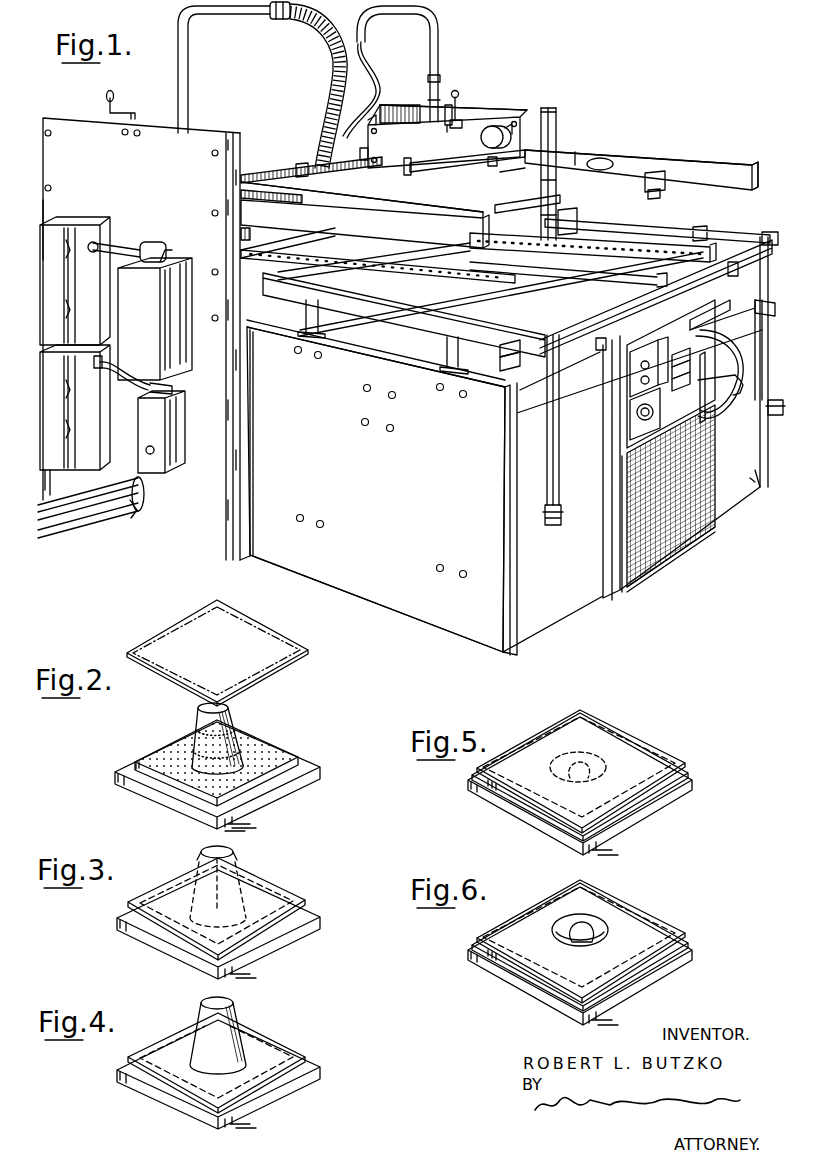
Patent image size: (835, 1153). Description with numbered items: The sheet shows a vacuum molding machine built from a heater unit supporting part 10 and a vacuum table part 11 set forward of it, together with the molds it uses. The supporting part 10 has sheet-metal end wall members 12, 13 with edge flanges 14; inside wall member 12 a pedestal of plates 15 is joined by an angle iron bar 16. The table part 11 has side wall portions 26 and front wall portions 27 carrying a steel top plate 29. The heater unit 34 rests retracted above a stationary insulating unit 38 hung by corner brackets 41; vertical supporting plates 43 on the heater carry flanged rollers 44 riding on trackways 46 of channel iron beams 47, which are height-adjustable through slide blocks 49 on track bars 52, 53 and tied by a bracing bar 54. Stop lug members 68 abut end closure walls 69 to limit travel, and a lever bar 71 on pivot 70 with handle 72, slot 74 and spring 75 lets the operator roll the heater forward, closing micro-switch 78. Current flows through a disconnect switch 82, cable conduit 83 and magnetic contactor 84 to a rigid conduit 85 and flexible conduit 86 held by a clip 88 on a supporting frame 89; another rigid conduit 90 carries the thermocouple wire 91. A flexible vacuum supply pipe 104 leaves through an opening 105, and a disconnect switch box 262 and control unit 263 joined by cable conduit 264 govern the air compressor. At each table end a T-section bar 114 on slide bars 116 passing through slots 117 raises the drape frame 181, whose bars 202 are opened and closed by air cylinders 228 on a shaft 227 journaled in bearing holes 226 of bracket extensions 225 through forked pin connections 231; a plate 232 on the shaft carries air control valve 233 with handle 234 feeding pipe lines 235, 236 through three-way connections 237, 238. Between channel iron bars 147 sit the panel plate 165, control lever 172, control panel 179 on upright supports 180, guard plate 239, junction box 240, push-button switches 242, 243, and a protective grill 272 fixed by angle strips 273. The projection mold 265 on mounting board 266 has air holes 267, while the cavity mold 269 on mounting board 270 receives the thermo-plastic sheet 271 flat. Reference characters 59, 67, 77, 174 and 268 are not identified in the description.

In FIG. 1, the heater unit supporting part 10 is at (37, 200).
In FIG. 1, the vacuum table part 11 is at (353, 611).
In FIG. 1, the end wall member 12 is at (62, 132).
In FIG. 1, the end wall member 13 is at (505, 110).
In FIG. 1, the flanges 14 is at (233, 133).
In FIG. 1, the vertically disposed plates 15 is at (252, 556).
In FIG. 1, the angle iron bar 16 is at (251, 320).
In FIG. 1, the side wall portions 26 is at (405, 607).
In FIG. 1, the front wall portions 27 is at (738, 495).
In FIG. 1, the top plate 29 is at (362, 352).
In FIG. 1, the heater unit 34 is at (518, 164).
In FIG. 1, the stationary heat insulating unit 38 is at (324, 246).
In FIG. 1, the angle corner brackets 41 is at (508, 207).
In FIG. 1, the vertical supporting plate 43 is at (472, 122).
In FIG. 1, the flanged rollers 44 is at (372, 122).
In FIG. 1, the horizontal trackways 46 is at (438, 216).
In FIG. 1, the horizontal channel iron beams 47 is at (400, 230).
In FIG. 1, the slide block 49 is at (556, 195).
In FIG. 1, the vertical track bar 52 is at (389, 106).
In FIG. 1, the vertical track bar 53 is at (555, 110).
In FIG. 1, the horizontal bracing bar 54 is at (577, 205).
In FIG. 1, the bracket 59 is at (470, 116).
In FIG. 1, the crank handle 67 is at (108, 102).
In FIG. 1, the stop lug member 68 is at (362, 151).
In FIG. 1, the end closure walls 69 is at (756, 183).
In FIG. 1, the pivot point 70 is at (481, 140).
In FIG. 1, the elongated lever bar 71 is at (574, 160).
In FIG. 1, the handle 72 is at (604, 158).
In FIG. 1, the slot 74 is at (430, 152).
In FIG. 1, the spring 75 is at (413, 163).
In FIG. 1, the clamp 77 is at (660, 172).
In FIG. 1, the micro-switch 78 is at (654, 192).
In FIG. 1, the disconnect switch 82 is at (42, 273).
In FIG. 1, the cable conduit 83 is at (130, 243).
In FIG. 1, the automatic magnetic contactor 84 is at (180, 266).
In FIG. 1, the rigid conduit 85 is at (188, 78).
In FIG. 1, the flexible conduit 86 is at (332, 84).
In FIG. 1, the clip 88 is at (270, 172).
In FIG. 1, the supporting frame 89 is at (300, 165).
In FIG. 1, the rigid conduit 90 is at (437, 45).
In FIG. 1, the conductor wire 91 is at (366, 60).
In FIG. 1, the flexible vacuum supply pipe 104 is at (86, 527).
In FIG. 1, the opening 105 is at (133, 512).
In FIG. 1, the transversely extending bar 114 is at (397, 317).
In FIG. 1, the vertical slide bars 116 is at (319, 322).
In FIG. 1, the slots 117 is at (326, 335).
In FIG. 1, the channel iron bars 147 is at (613, 590).
In FIG. 1, the panel plate 165 is at (730, 418).
In FIG. 1, the control lever 172 is at (704, 385).
In FIG. 1, the connector 174 is at (740, 390).
In FIG. 1, the control panel 179 is at (662, 340).
In FIG. 1, the upright supports 180 is at (622, 352).
In FIG. 1, the drape frame 181 is at (598, 238).
In FIG. 1, the bars 202 is at (727, 232).
In FIG. 1, the bracket extensions 225 is at (512, 346).
In FIG. 1, the bearing holes 226 is at (515, 360).
In FIG. 1, the shaft 227 is at (748, 250).
In FIG. 1, the air cylinders 228 is at (555, 522).
In FIG. 1, the forked pin connections 231 is at (773, 230).
In FIG. 1, the downwardly extending plate 232 is at (678, 355).
In FIG. 1, the air control valve 233 is at (697, 340).
In FIG. 1, the control handle 234 is at (695, 358).
In FIG. 1, the pipe lines 235 is at (568, 440).
In FIG. 1, the pipe lines 236 is at (735, 274).
In FIG. 1, the three-way pipe connection 237 is at (757, 307).
In FIG. 1, the three-way pipe connection 238 is at (705, 318).
In FIG. 1, the guard plate 239 is at (600, 400).
In FIG. 1, the junction box 240 is at (654, 405).
In FIG. 1, the push-button switch 242 is at (636, 352).
In FIG. 1, the push-button switch 243 is at (658, 340).
In FIG. 1, the disconnect switch box 262 is at (45, 395).
In FIG. 1, the control unit 263 is at (138, 437).
In FIG. 1, the cable conduit 264 is at (125, 382).
In FIG. 2, the projection mold 265 is at (196, 727).
In FIG. 3, the projection mold 265 is at (262, 866).
In FIG. 4, the projection mold 265 is at (280, 1038).
In FIG. 2, the mounting board 266 is at (130, 760).
In FIG. 3, the mounting board 266 is at (292, 928).
In FIG. 4, the mounting board 266 is at (296, 1082).
In FIG. 2, the air holes 267 is at (180, 737).
In FIG. 2, the sheet 268 is at (183, 628).
In FIG. 3, the sheet 268 is at (248, 858).
In FIG. 4, the sheet 268 is at (262, 1035).
In FIG. 5, the cavity mold 269 is at (492, 796).
In FIG. 6, the cavity mold 269 is at (618, 910).
In FIG. 5, the mounting board 270 is at (518, 808).
In FIG. 6, the mounting board 270 is at (690, 945).
In FIG. 5, the thermo-plastic sheet 271 is at (520, 738).
In FIG. 6, the thermo-plastic sheet 271 is at (650, 917).
In FIG. 1, the protective grill 272 is at (678, 558).
In FIG. 1, the angle strips 273 is at (650, 583).